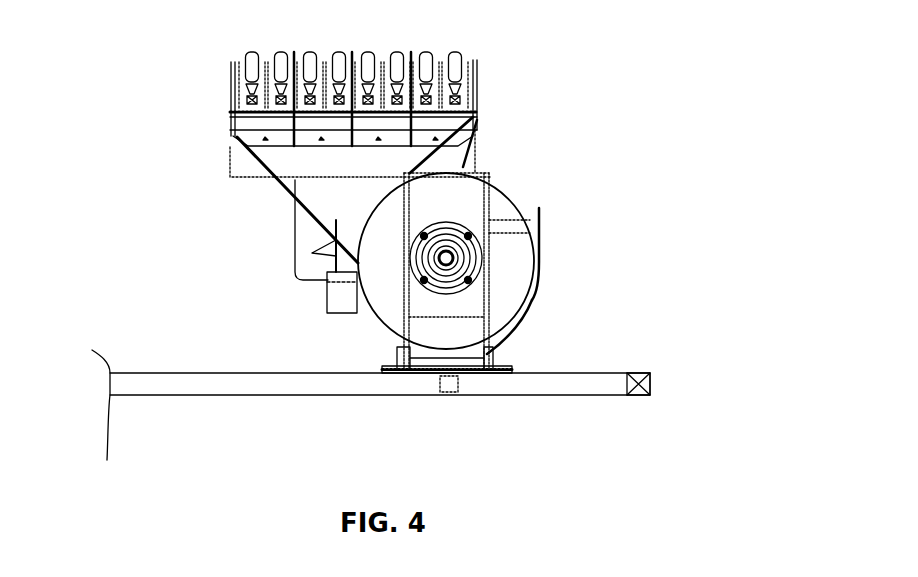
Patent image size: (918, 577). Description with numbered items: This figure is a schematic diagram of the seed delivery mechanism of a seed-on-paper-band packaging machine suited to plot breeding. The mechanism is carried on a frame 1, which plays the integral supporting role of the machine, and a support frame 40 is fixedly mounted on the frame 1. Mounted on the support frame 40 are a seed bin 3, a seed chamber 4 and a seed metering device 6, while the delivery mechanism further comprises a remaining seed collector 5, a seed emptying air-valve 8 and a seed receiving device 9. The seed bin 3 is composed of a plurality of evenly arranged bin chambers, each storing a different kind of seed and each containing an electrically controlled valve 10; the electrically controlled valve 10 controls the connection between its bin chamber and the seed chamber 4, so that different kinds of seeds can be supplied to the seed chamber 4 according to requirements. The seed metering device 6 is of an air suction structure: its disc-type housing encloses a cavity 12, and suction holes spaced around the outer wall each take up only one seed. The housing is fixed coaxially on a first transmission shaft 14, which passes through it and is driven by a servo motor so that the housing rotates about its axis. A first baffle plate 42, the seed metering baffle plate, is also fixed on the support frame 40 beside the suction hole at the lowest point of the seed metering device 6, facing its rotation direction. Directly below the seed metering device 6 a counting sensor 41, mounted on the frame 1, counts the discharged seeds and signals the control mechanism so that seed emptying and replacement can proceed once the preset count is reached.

The frame 1 is at (575, 390).
The seed bin 3 is at (477, 82).
The seed chamber 4 is at (347, 210).
The remaining seed collector 5 is at (342, 295).
The seed metering device 6 is at (540, 266).
The seed emptying air-valve 8 is at (480, 153).
The seed receiving device 9 is at (531, 303).
The electrically controlled valve 10 is at (253, 68).
The cavity 12 is at (490, 218).
The first transmission shaft 14 is at (485, 253).
The support frame 40 is at (388, 369).
The counting sensor 41 is at (435, 387).
The first baffle plate 42 is at (495, 346).